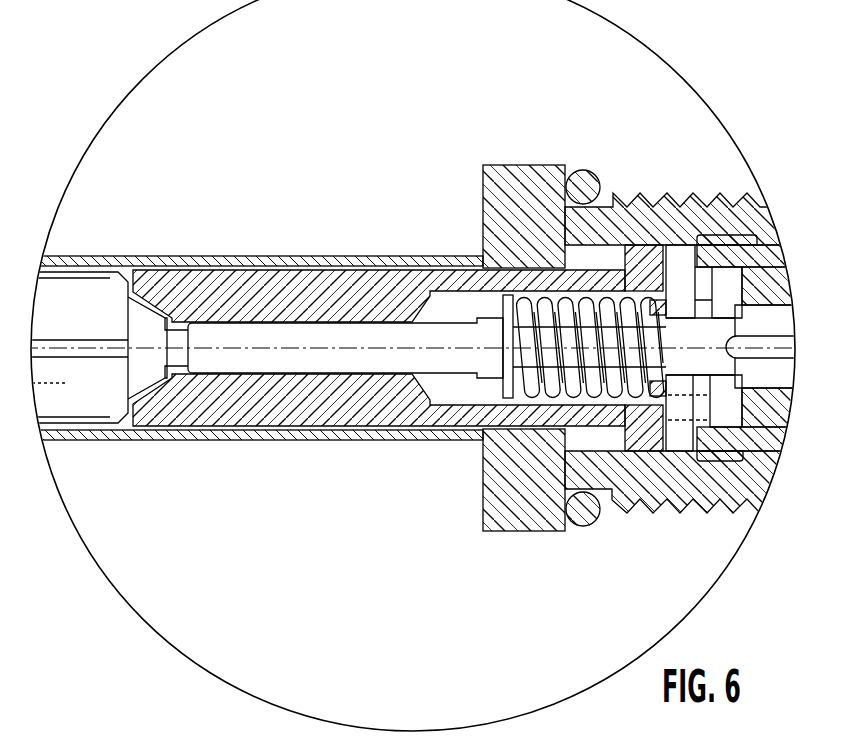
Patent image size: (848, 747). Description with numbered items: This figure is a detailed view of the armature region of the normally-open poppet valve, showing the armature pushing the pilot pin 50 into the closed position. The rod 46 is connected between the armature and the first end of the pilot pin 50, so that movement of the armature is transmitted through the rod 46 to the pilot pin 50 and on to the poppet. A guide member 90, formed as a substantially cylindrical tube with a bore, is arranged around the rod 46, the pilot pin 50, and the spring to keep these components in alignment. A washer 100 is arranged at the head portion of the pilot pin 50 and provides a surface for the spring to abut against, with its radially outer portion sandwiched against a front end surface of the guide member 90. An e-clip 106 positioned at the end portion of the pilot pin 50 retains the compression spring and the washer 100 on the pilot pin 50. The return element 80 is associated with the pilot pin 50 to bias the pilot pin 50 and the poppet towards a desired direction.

The rod 46 is at (253, 355).
The pilot pin 50 is at (778, 370).
The return element 80 is at (626, 300).
The guide member 90 is at (237, 297).
The washer 100 is at (680, 408).
The e-clip 106 is at (507, 307).